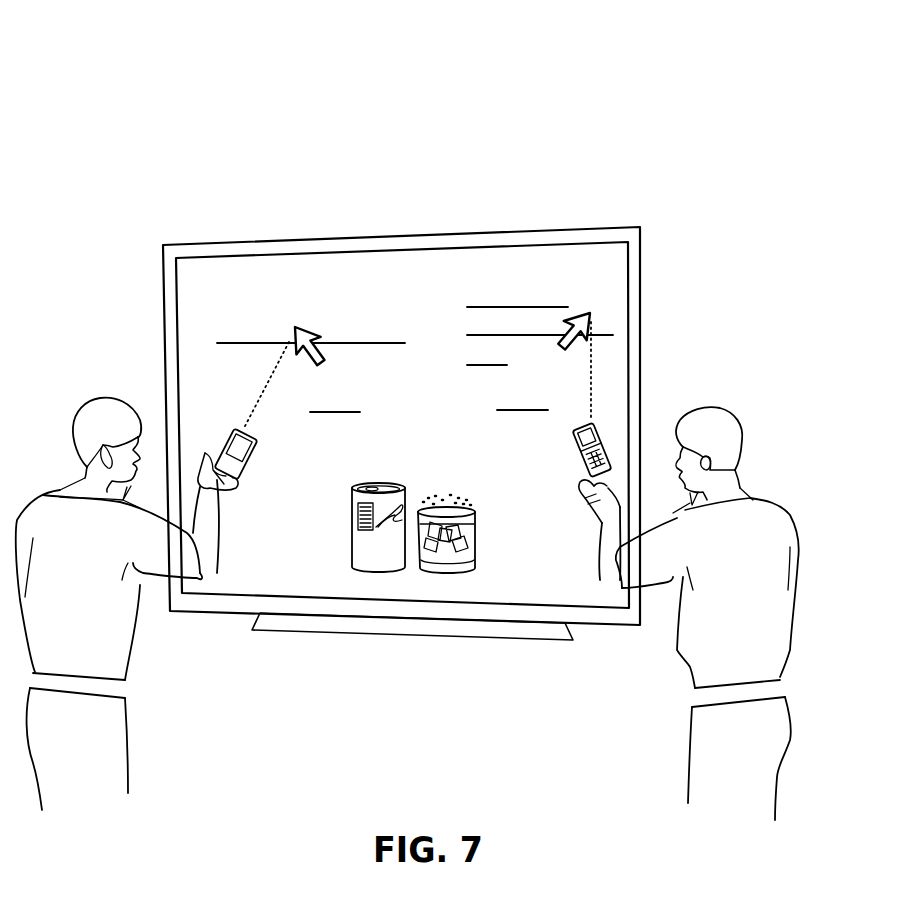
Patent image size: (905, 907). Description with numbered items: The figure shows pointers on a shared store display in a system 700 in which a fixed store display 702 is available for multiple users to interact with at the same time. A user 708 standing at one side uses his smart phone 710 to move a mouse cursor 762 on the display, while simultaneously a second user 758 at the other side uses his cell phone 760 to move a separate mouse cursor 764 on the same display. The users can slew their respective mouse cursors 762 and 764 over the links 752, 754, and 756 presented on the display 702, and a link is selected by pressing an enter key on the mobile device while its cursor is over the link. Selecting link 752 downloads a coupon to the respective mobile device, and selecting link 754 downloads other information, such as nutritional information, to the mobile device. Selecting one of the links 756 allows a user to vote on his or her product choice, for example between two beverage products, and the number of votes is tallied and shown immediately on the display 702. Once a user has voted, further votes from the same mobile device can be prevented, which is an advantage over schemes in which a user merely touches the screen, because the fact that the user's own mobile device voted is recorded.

The system 700 is at (205, 78).
The fixed store display 702 is at (213, 244).
The user 708 is at (100, 396).
The smart phone 710 is at (246, 462).
The link 752 is at (213, 334).
The link 754 is at (484, 282).
The links 756 is at (519, 409).
The user 758 is at (737, 413).
The cell phone 760 is at (572, 444).
The mouse cursor 762 is at (323, 354).
The mouse cursor 764 is at (562, 347).